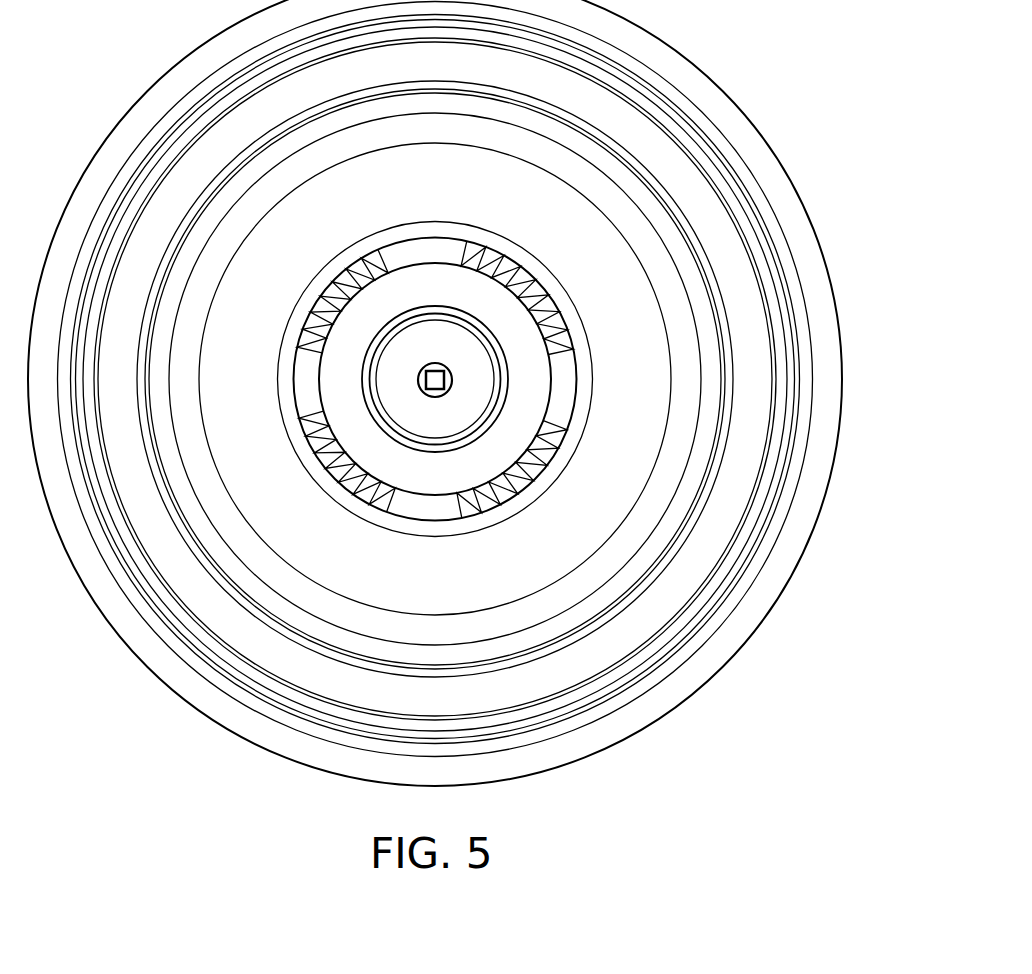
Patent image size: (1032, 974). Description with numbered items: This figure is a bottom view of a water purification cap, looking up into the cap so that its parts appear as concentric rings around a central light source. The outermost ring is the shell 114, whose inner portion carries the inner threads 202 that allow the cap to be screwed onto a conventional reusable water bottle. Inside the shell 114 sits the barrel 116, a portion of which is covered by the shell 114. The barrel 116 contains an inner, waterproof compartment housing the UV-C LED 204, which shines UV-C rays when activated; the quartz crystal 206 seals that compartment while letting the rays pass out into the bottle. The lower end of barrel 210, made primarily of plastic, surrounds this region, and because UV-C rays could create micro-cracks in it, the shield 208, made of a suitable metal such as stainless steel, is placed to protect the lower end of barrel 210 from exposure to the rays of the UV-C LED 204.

The shell 114 is at (685, 702).
The barrel 116 is at (685, 552).
The inner threads 202 is at (695, 643).
The UV-C LED 204 is at (450, 372).
The quartz crystal 206 is at (468, 385).
The shield 208 is at (570, 392).
The lower end of barrel 210 is at (643, 453).